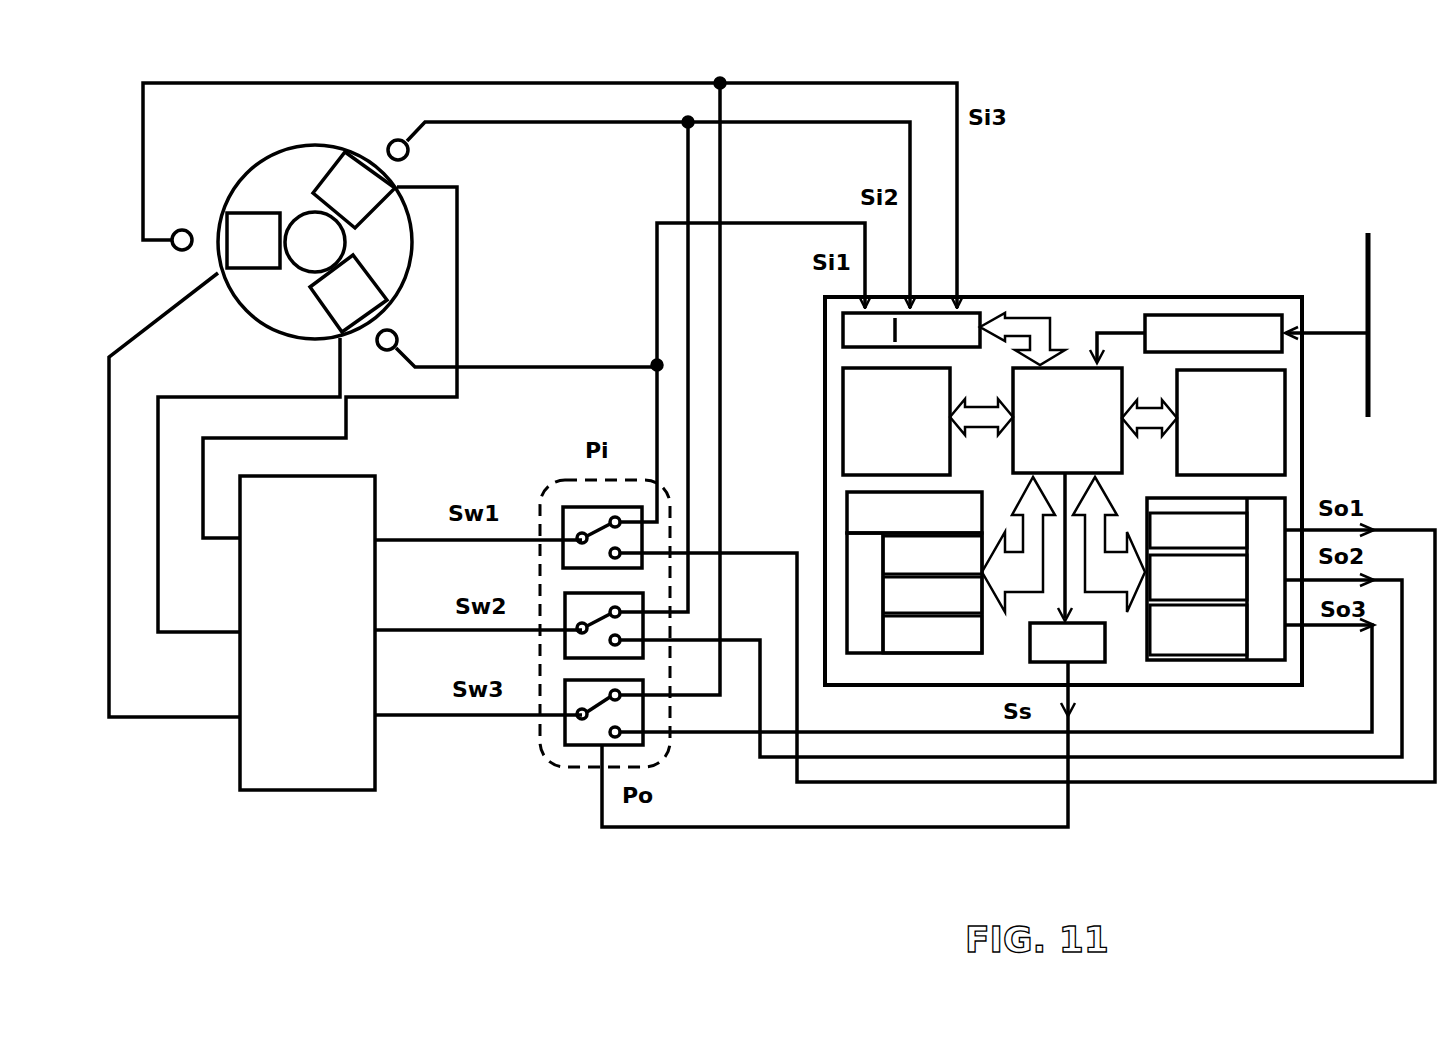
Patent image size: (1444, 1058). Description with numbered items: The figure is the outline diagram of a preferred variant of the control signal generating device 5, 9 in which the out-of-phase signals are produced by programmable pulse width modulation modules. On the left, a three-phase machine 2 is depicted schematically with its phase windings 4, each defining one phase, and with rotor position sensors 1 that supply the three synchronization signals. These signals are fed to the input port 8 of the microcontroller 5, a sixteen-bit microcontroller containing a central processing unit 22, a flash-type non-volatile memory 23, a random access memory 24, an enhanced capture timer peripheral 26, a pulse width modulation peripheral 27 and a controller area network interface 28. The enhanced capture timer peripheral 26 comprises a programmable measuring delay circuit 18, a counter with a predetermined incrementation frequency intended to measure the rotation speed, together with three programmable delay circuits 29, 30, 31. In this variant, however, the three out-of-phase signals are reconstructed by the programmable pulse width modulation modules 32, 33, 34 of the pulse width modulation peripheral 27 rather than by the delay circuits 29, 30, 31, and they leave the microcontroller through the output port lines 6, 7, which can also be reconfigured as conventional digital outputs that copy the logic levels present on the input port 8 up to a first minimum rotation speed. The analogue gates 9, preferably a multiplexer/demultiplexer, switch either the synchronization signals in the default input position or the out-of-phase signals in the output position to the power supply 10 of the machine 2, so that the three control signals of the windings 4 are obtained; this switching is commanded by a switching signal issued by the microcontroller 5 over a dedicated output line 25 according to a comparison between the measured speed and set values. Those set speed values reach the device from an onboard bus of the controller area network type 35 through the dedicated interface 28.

The rotor position sensor 1 is at (190, 228).
The three-phase machine 2 is at (206, 259).
The phase winding 4 is at (337, 180).
The microcontroller 5 is at (1131, 290).
The output port 6 is at (865, 542).
The output port 7 is at (1265, 640).
The input port 8 is at (977, 330).
The analogue gates 9 is at (588, 757).
The power supply 10 is at (355, 775).
The programmable measuring delay circuit TIMERM 18 is at (853, 505).
The central processing unit 22 is at (1062, 390).
The non-volatile memory 23 is at (1258, 455).
The RAM memory 24 is at (858, 410).
The dedicated output line 25 is at (1083, 650).
The ECT peripheral 26 is at (859, 658).
The PWM peripheral 27 is at (1210, 664).
The CAN interface 28 is at (1170, 335).
The programmable delay circuit TIMER1 29 is at (877, 590).
The programmable delay circuit TIMER2 30 is at (893, 600).
The programmable delay circuit TIMER3 31 is at (945, 640).
The programmable pulse width modulation module 32 is at (1222, 510).
The programmable pulse width modulation module 33 is at (1145, 590).
The programmable pulse width modulation module 34 is at (1227, 650).
The CAN bus 35 is at (1372, 258).